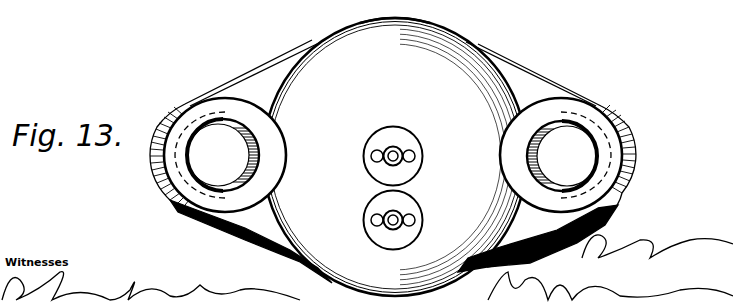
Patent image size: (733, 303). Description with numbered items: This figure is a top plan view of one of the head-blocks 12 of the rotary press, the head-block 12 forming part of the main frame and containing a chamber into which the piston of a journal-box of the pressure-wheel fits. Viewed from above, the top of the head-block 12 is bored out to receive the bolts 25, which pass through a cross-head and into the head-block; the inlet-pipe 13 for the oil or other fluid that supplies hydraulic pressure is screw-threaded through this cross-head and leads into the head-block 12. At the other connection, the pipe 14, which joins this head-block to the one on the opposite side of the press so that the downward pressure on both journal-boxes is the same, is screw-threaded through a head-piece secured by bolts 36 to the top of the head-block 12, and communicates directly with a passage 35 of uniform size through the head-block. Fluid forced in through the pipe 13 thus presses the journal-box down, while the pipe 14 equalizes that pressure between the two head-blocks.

The head-block 12 is at (395, 157).
The inlet-pipe 13 is at (397, 229).
The pipe 14 is at (398, 147).
The bolts 25 is at (371, 157).
The passage 35 is at (416, 2).
The bolts 36 is at (371, 220).